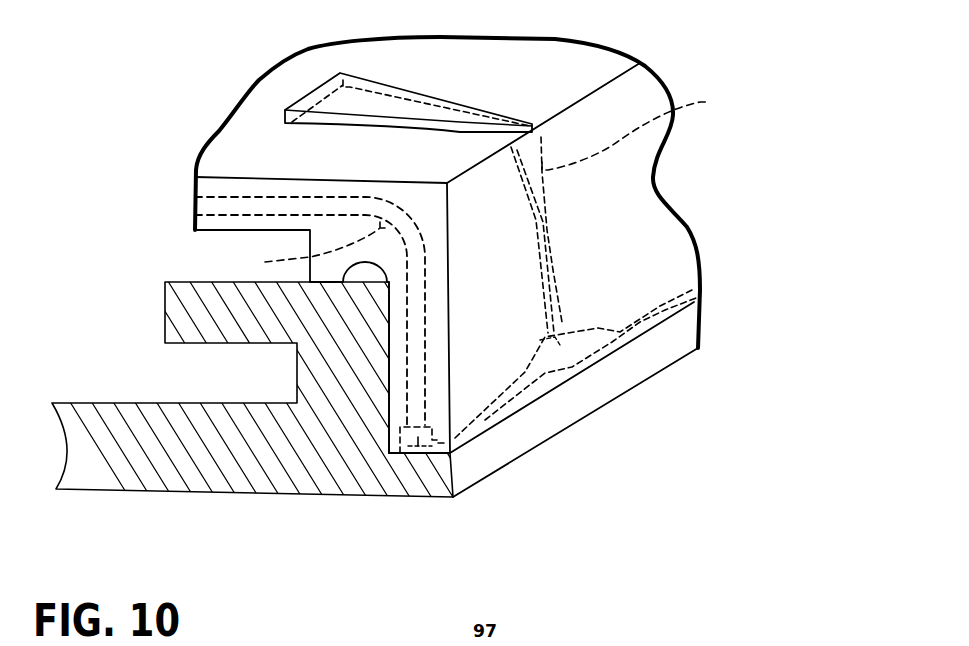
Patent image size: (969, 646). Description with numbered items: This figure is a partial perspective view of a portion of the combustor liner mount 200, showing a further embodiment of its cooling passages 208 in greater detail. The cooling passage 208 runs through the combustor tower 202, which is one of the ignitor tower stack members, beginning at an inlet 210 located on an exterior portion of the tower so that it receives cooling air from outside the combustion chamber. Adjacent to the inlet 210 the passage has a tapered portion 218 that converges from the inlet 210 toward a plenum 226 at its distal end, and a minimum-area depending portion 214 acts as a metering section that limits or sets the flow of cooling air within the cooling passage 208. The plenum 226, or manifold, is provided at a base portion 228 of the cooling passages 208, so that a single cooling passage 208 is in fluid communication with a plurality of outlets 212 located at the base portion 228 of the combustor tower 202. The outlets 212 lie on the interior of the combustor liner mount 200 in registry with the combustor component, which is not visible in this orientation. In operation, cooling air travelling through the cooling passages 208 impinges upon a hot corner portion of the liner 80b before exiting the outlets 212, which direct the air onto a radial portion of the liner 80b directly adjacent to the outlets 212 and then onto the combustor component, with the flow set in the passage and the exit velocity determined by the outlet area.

The combustor liner mount 200 is at (215, 48).
The combustor tower 202 is at (257, 155).
The cooling passage 208 is at (463, 98).
The inlet 210 is at (303, 100).
The outlet 212 is at (477, 443).
The minimum-area depending portion 214 is at (479, 183).
The tapered portion 218 is at (380, 98).
The plenum 226 is at (417, 440).
The base portion 228 is at (425, 455).
The liner 80b is at (320, 468).